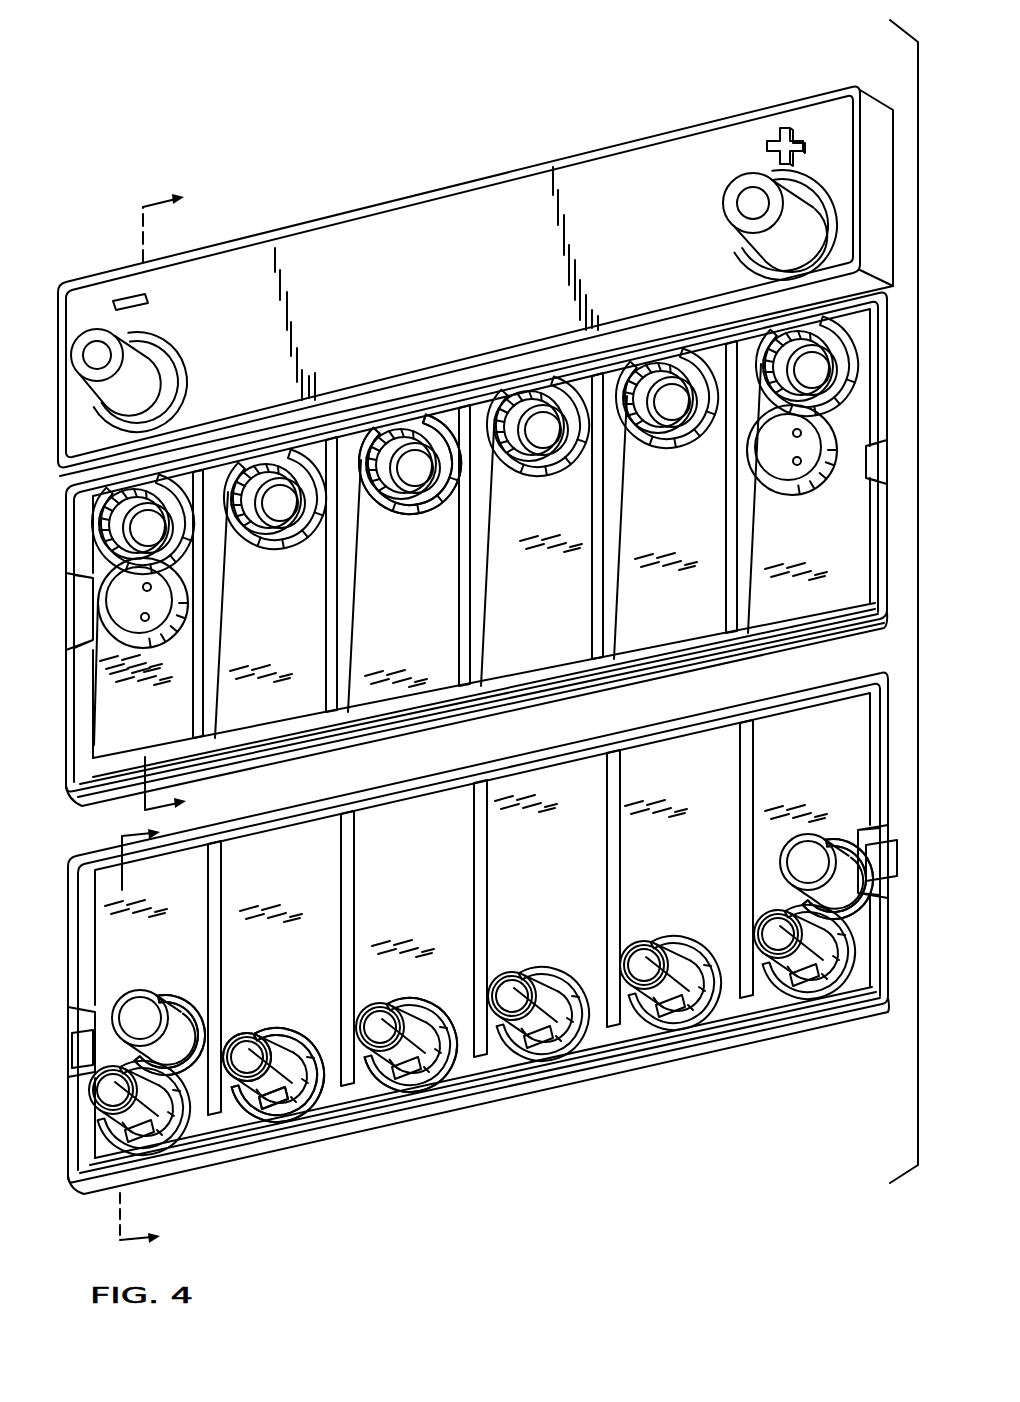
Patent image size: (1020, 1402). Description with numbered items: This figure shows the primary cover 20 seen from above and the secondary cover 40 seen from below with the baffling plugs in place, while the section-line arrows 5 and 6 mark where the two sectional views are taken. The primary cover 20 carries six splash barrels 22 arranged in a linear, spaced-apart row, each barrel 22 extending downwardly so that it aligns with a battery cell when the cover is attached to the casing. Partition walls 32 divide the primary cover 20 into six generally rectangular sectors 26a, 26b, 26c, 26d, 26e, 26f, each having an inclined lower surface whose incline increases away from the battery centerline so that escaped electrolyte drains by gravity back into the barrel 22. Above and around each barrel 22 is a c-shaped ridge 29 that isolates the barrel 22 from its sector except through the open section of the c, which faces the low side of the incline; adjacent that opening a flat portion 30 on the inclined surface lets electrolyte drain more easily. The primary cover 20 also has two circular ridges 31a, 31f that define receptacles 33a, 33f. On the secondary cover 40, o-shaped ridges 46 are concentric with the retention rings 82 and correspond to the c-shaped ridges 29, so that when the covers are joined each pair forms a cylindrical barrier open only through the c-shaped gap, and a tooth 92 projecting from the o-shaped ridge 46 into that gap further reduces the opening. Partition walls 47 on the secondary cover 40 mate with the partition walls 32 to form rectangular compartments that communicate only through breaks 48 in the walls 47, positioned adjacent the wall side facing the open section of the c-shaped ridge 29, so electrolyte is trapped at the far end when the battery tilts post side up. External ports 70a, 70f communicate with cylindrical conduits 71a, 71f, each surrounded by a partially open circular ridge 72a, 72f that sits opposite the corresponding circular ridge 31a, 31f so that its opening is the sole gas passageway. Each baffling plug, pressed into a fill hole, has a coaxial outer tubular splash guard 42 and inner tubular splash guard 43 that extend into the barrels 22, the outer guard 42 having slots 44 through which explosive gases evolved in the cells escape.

The primary cover 20 is at (366, 194).
The section line 5- 5 is at (173, 501).
The section line 6- 6 is at (130, 1042).
The splash barrel 22 is at (405, 428).
The flat portion 30 is at (400, 430).
The c-shaped ridge 29 is at (434, 518).
The partition wall 32 is at (290, 733).
The sector 26a is at (141, 750).
The sector 26b is at (273, 720).
The sector 26c is at (405, 515).
The sector 26d is at (548, 647).
The sector 26e is at (687, 615).
The sector 26f is at (797, 557).
The circular ridge 31a is at (104, 600).
The receptacle 33a is at (146, 620).
The circular ridge 31f is at (822, 470).
The receptacle 33f is at (780, 455).
The secondary cover 40 is at (670, 1058).
The partition wall 47 is at (352, 845).
The external port 70a is at (90, 1033).
The cylindrical conduit 71a is at (122, 993).
The partially open circular ridge 72a is at (165, 993).
The external port 70f is at (868, 833).
The cylindrical conduit 71f is at (780, 878).
The partially open circular ridge 72f is at (833, 837).
The outer tubular splash guard 42 is at (262, 1092).
The inner tubular splash guard 43 is at (243, 1053).
The slot 44 is at (275, 1100).
The o-shaped ridge 46 is at (290, 1040).
The retention ring 82 is at (452, 1027).
The tooth 92 is at (397, 1075).
The break 48 is at (473, 1065).